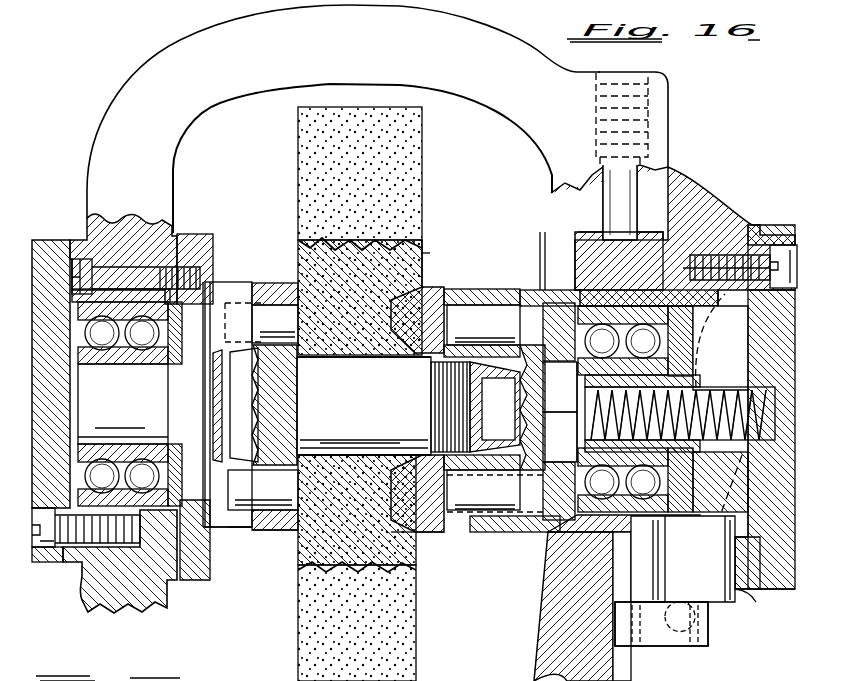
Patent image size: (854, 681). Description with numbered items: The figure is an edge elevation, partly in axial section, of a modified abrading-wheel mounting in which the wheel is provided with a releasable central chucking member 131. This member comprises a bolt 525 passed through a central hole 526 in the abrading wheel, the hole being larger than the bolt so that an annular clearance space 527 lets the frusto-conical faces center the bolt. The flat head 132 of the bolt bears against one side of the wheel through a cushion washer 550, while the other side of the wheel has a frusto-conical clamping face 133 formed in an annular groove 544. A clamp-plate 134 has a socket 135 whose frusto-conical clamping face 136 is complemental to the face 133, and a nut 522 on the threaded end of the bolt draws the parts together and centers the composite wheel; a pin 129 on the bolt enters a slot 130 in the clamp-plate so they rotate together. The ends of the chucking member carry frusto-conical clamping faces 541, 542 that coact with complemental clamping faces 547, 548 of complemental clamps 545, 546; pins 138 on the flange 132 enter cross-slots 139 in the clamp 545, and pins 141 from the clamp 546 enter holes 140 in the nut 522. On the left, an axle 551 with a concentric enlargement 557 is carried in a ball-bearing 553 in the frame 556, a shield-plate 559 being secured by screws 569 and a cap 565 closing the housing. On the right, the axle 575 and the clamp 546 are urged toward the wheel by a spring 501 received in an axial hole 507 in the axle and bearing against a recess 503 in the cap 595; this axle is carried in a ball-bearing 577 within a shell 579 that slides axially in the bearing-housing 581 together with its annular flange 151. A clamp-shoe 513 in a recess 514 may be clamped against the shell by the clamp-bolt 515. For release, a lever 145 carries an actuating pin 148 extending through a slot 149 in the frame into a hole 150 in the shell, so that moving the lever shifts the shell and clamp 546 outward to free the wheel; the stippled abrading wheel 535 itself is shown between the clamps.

The pin 129 is at (428, 460).
The slot 130 is at (398, 458).
The releasable central chucking member 131 is at (432, 286).
The head of the bolt 132 is at (260, 284).
The frusto-conical clamping face 133 is at (428, 270).
The clamp-plate 134 is at (432, 532).
The socket 135 is at (420, 534).
The frusto-conical clamping face 136 is at (410, 534).
The pins 138 is at (263, 524).
The cross-slots 139 is at (258, 548).
The holes 140 is at (450, 323).
The pins 141 is at (505, 322).
The lever 145 is at (702, 620).
The actuating pin 148 is at (655, 556).
The slot 149 is at (745, 594).
The hole 150 is at (718, 522).
The annular flange 151 is at (545, 300).
The spring 501 is at (715, 395).
The recess 503 is at (748, 466).
The axial hole 507 is at (690, 433).
The clamp-shoe 513 is at (718, 248).
The recess 514 is at (700, 205).
The clamp-bolt 515 is at (628, 66).
The nut 522 is at (490, 289).
The bolt 525 is at (430, 410).
The central hole 526 is at (345, 357).
The annular clearance space 527 is at (390, 357).
The core 535 is at (416, 161).
The frusto-conical clamping face 541 is at (238, 377).
The frusto-conical clamping face 542 is at (500, 458).
The annular groove 544 is at (428, 256).
The complemental clamp 545 is at (215, 522).
The complemental clamp 546 is at (503, 532).
The complemental clamping face 547 is at (212, 445).
The complemental clamping face 548 is at (545, 445).
The cushion washer 550 is at (296, 284).
The axle 551 is at (128, 413).
The ball-bearing 553 is at (100, 345).
The frame 556 is at (92, 606).
The concentric enlargement 557 is at (172, 384).
The shield-plate 559 is at (190, 565).
The cap 565 is at (42, 562).
The screws 569 is at (88, 222).
The axle 575 is at (588, 380).
The ball-bearing 577 is at (548, 567).
The shell 579 is at (676, 506).
The bearing-housing 581 is at (748, 228).
The cap 595 is at (782, 240).